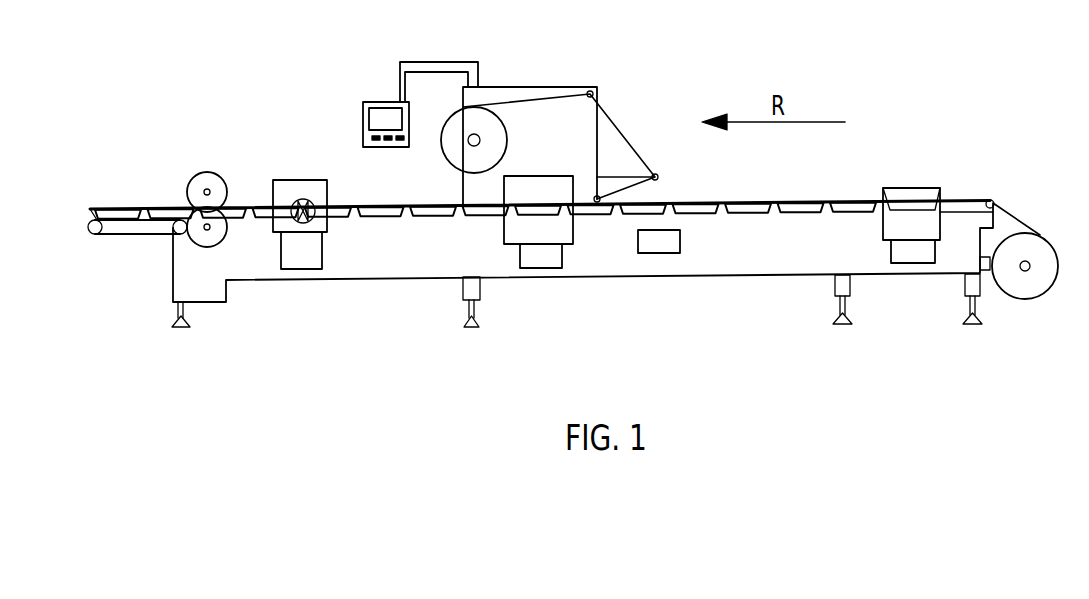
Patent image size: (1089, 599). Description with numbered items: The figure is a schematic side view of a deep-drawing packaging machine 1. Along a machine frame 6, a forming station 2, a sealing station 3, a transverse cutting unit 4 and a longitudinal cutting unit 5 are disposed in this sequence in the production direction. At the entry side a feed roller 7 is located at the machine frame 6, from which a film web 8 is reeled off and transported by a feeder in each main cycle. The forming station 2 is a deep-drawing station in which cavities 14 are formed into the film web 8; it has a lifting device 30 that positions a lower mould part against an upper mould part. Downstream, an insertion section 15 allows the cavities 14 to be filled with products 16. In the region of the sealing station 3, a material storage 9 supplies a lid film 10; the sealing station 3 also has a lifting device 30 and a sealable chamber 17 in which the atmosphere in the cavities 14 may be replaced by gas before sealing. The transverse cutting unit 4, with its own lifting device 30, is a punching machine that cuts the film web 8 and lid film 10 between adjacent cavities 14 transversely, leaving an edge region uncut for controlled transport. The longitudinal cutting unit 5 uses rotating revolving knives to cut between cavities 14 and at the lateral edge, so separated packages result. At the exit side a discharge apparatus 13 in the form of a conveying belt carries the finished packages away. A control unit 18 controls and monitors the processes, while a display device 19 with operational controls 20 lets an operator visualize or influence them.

The deep-drawing packaging machine 1 is at (795, 15).
The forming station 2 is at (916, 190).
The sealing station 3 is at (527, 188).
The transverse cutting unit 4 is at (290, 186).
The longitudinal cutting unit 5 is at (207, 166).
The machine frame 6 is at (455, 287).
The feed roller 7 is at (1035, 242).
The film web 8 is at (1012, 210).
The material storage 9 is at (457, 157).
The lid film 10 is at (560, 90).
The discharge apparatus 13 is at (123, 234).
The cavities 14 is at (905, 212).
The insertion section 15 is at (725, 226).
The products 16 is at (767, 202).
The sealable chamber 17 is at (537, 237).
The control unit 18 is at (658, 247).
The display device 19 is at (380, 102).
The operational controls 20 is at (363, 138).
The lifting device 30 is at (302, 258).